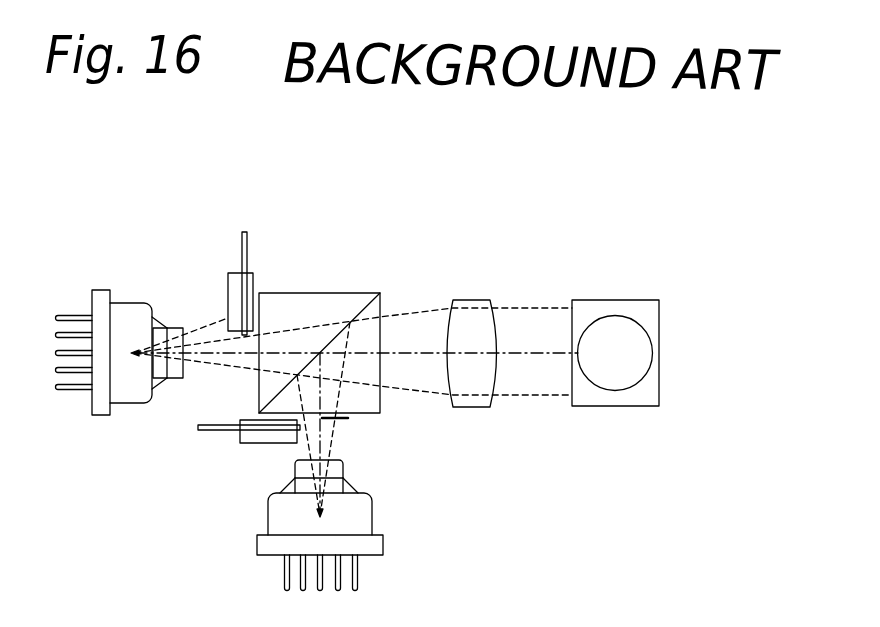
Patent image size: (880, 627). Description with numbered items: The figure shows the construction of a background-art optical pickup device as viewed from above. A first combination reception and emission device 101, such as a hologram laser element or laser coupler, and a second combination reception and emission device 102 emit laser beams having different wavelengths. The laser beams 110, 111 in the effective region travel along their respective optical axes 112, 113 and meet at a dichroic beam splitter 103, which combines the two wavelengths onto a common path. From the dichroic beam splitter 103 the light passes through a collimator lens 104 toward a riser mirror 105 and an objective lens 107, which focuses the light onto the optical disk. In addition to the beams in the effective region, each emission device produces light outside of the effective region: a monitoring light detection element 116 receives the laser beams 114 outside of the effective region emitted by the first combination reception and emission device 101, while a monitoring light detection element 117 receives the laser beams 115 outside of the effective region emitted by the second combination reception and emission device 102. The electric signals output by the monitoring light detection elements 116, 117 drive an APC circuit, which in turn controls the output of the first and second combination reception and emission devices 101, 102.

The first combination reception and emission device 101 is at (137, 403).
The second combination reception and emission device 102 is at (372, 515).
The dichroic beam splitter 103 is at (325, 292).
The collimator lens 104 is at (472, 299).
The riser mirror 105 is at (608, 299).
The objective lens 107 is at (635, 348).
The laser beam in an effective region 110 is at (193, 363).
The laser beam in an effective region 111 is at (332, 443).
The optical axis 112 is at (232, 356).
The optical axis 113 is at (350, 420).
The laser beams outside of an effective region 114 is at (202, 326).
The laser beams outside of an effective region 115 is at (283, 445).
The monitoring light detection element 116 is at (245, 230).
The monitoring light detection element 117 is at (255, 443).